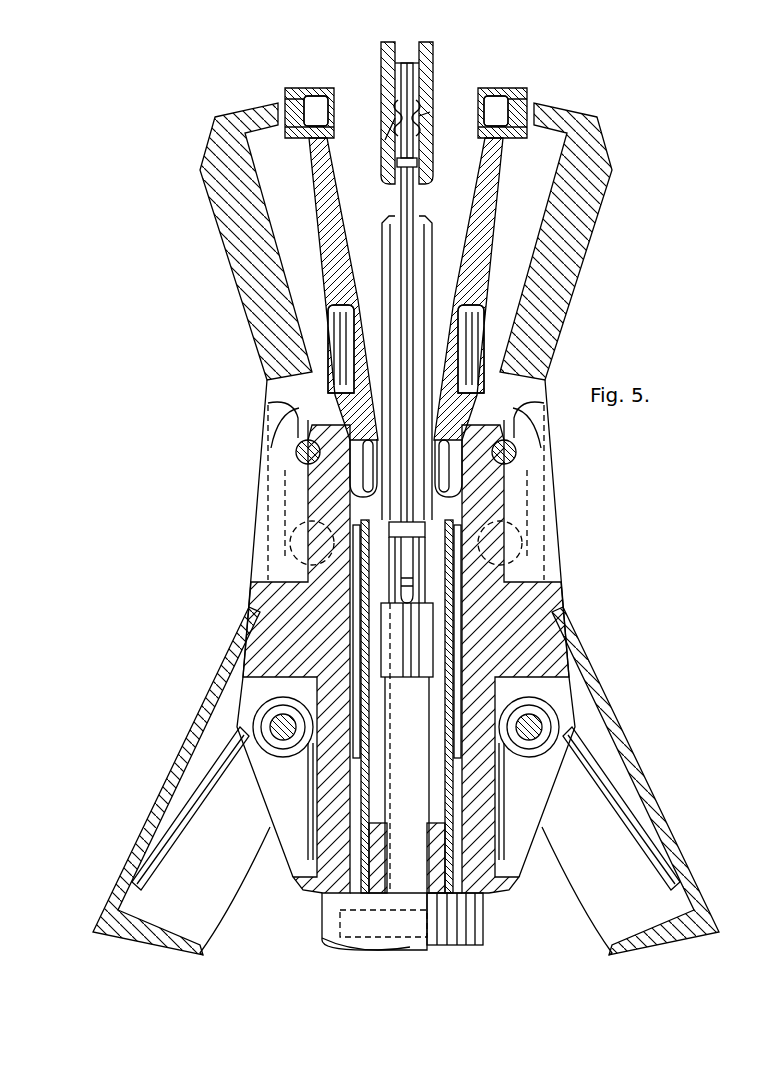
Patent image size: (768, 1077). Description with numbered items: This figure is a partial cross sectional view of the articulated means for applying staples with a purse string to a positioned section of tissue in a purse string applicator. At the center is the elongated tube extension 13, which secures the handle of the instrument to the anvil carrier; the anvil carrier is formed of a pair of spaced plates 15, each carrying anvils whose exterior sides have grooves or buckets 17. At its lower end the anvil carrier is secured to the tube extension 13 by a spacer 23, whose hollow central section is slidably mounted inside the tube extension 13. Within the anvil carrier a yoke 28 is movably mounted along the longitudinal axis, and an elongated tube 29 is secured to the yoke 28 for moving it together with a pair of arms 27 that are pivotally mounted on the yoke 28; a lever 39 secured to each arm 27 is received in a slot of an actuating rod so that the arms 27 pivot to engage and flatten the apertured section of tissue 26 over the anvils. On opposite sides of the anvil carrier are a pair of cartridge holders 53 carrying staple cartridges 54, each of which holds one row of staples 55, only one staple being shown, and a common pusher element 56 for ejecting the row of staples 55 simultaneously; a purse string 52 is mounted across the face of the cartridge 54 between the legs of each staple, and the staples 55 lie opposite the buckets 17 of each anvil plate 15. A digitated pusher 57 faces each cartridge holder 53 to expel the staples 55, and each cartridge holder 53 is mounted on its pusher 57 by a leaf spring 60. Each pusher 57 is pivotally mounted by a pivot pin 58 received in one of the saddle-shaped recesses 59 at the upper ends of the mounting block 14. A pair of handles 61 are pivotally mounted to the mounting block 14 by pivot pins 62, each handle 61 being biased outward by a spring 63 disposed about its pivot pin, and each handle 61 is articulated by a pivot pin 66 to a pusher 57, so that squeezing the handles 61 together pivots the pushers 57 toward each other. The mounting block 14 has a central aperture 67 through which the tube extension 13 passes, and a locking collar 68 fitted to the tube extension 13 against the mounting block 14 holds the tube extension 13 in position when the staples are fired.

The elongated tube extension 13 is at (358, 770).
The mounting block 14 is at (548, 606).
The plates 15 is at (382, 243).
The buckets 17 is at (396, 118).
The spacer 23 is at (372, 856).
The apertured section of tissue 26 is at (434, 47).
The arms 27 is at (409, 233).
The yoke 28 is at (407, 670).
The elongated tube 29 is at (395, 893).
The lever 39 is at (394, 525).
The purse string 52 is at (330, 111).
The cartridge holders 53 is at (317, 183).
The staple cartridge 54 is at (318, 89).
The staples 55 is at (482, 130).
The common pusher element 56 is at (298, 96).
The digitated pusher 57 is at (218, 184).
The pivot pin 58 is at (296, 455).
The saddle-shaped recesses 59 is at (268, 404).
The leaf spring 60 is at (361, 440).
The handles 61 is at (152, 810).
The pivot pins 62 is at (283, 741).
The spring 63 is at (178, 831).
The pivot pin 66 is at (300, 549).
The central aperture 67 is at (364, 809).
The locking collar 68 is at (483, 919).